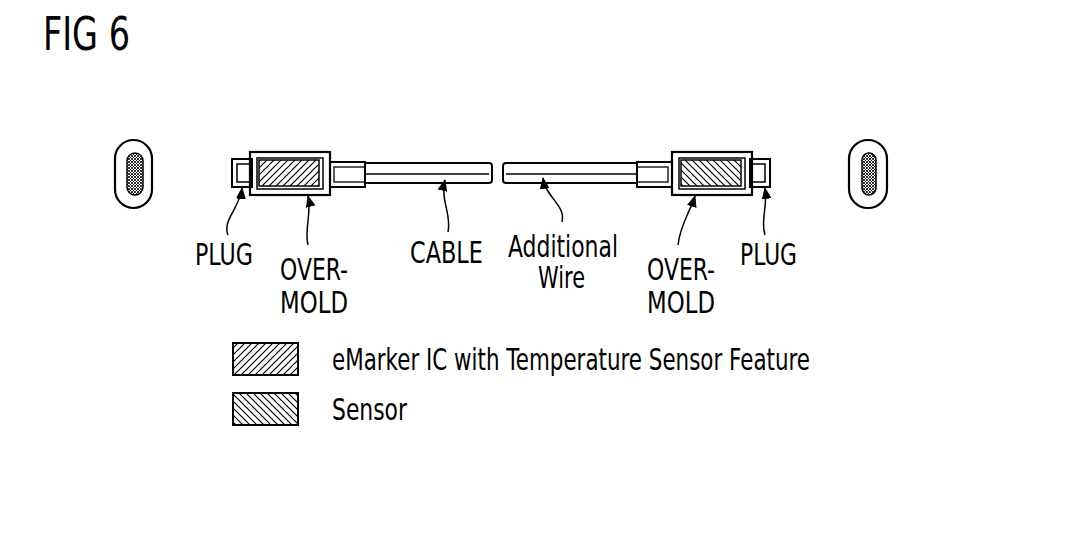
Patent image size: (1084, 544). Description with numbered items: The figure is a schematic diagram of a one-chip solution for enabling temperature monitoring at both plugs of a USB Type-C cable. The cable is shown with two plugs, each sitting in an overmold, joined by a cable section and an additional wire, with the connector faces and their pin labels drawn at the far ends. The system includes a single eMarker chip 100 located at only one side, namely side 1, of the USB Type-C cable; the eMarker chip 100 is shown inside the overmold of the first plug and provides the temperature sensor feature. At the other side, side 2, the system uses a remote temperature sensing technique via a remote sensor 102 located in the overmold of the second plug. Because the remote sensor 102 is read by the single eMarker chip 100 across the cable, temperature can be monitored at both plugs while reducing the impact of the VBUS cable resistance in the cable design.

The side 1 is at (345, 131).
The side 2 is at (655, 131).
The eMarker chip 100 is at (288, 162).
The remote sensor 102 is at (712, 162).